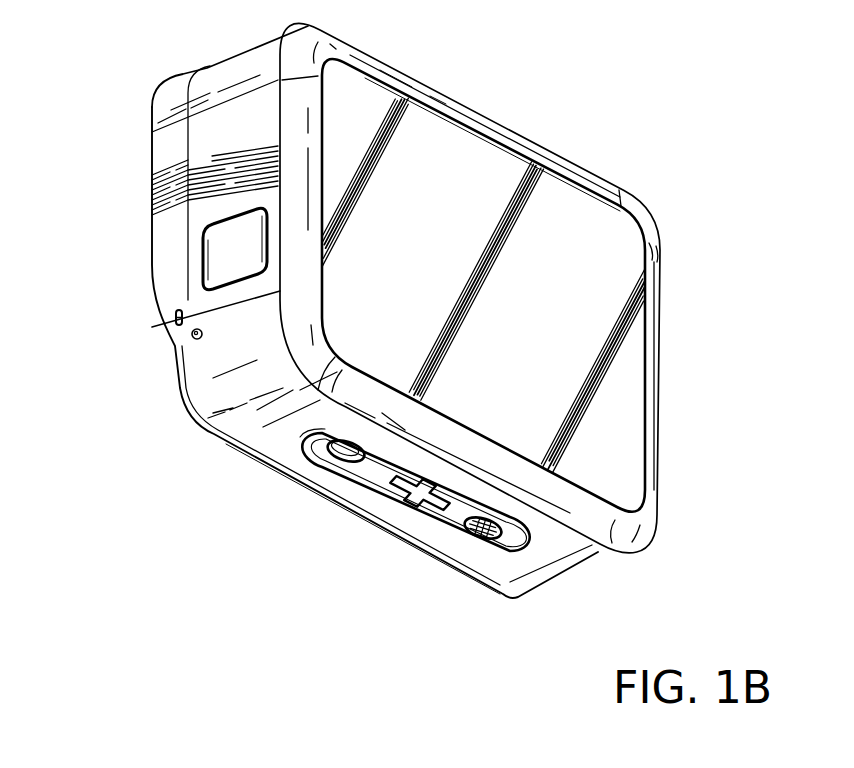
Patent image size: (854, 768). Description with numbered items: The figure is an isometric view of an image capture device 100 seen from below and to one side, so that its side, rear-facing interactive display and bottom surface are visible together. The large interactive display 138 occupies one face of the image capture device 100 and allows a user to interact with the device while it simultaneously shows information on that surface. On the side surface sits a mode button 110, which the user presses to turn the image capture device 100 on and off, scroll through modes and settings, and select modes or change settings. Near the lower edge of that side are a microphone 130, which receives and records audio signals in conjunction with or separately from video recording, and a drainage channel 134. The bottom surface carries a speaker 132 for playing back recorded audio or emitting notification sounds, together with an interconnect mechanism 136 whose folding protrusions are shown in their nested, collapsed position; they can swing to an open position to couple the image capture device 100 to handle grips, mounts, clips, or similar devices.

The image capture device 100 is at (645, 110).
The mode button 110 is at (217, 254).
The microphone 130 is at (192, 336).
The speaker 132 is at (478, 545).
The drainage channel 134 is at (176, 318).
The interconnect mechanism 136 is at (349, 474).
The interactive display 138 is at (620, 405).